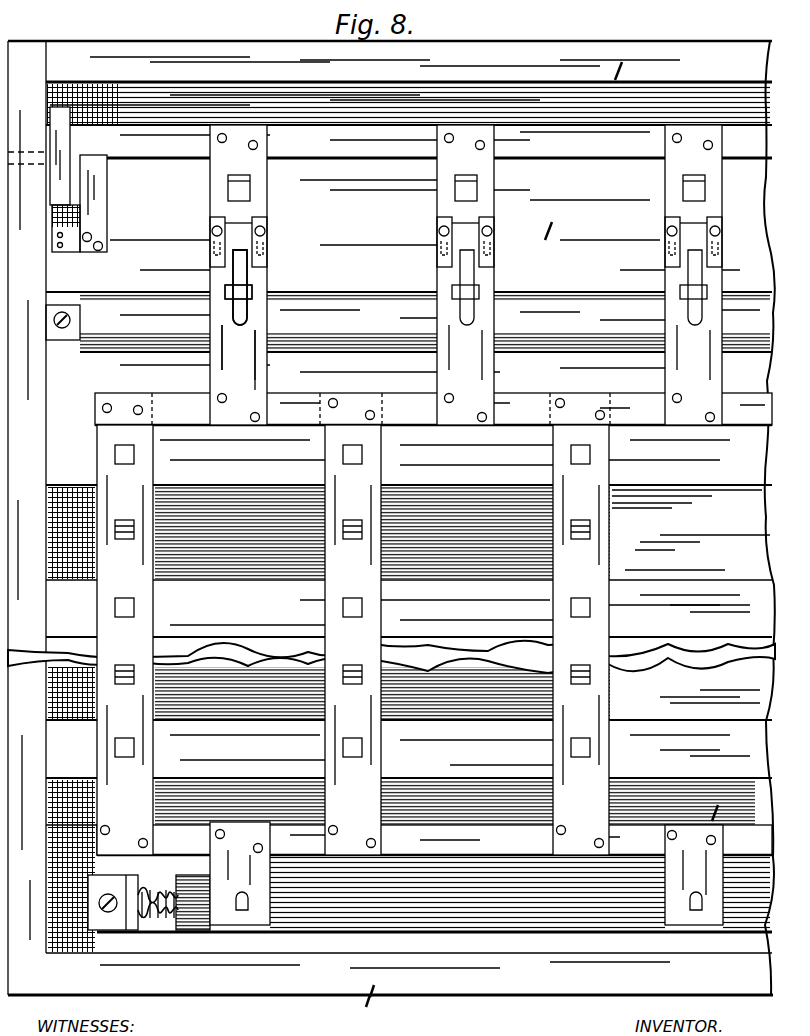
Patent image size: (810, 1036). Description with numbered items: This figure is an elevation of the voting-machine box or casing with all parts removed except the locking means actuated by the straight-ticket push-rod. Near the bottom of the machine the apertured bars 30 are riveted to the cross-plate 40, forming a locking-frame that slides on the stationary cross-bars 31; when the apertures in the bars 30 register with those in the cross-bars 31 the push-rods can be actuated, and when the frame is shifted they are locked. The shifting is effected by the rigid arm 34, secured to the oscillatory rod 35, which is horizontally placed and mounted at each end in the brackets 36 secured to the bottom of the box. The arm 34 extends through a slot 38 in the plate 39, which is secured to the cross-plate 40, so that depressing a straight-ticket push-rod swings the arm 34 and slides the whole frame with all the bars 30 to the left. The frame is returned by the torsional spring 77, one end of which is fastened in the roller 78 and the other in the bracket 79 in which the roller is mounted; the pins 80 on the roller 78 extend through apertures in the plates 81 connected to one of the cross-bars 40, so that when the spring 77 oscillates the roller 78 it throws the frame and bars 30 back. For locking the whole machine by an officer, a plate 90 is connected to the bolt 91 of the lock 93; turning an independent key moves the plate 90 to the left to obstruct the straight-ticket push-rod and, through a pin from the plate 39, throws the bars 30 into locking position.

The bars 30 is at (353, 640).
The stationary cross-bars 31 is at (247, 685).
The rigid arm 34 is at (242, 275).
The oscillatory rod 35 is at (409, 322).
The brackets 36 is at (64, 308).
The slot 38 is at (240, 318).
The plate 39 is at (265, 370).
The cross-plate 40 is at (310, 404).
The spring 77 is at (170, 910).
The roller 78 is at (385, 950).
The bracket 79 is at (131, 930).
The pins 80 is at (272, 910).
The plates 81 is at (466, 873).
The plate 90 is at (258, 213).
The bolt 91 is at (56, 222).
The lock 93 is at (56, 183).